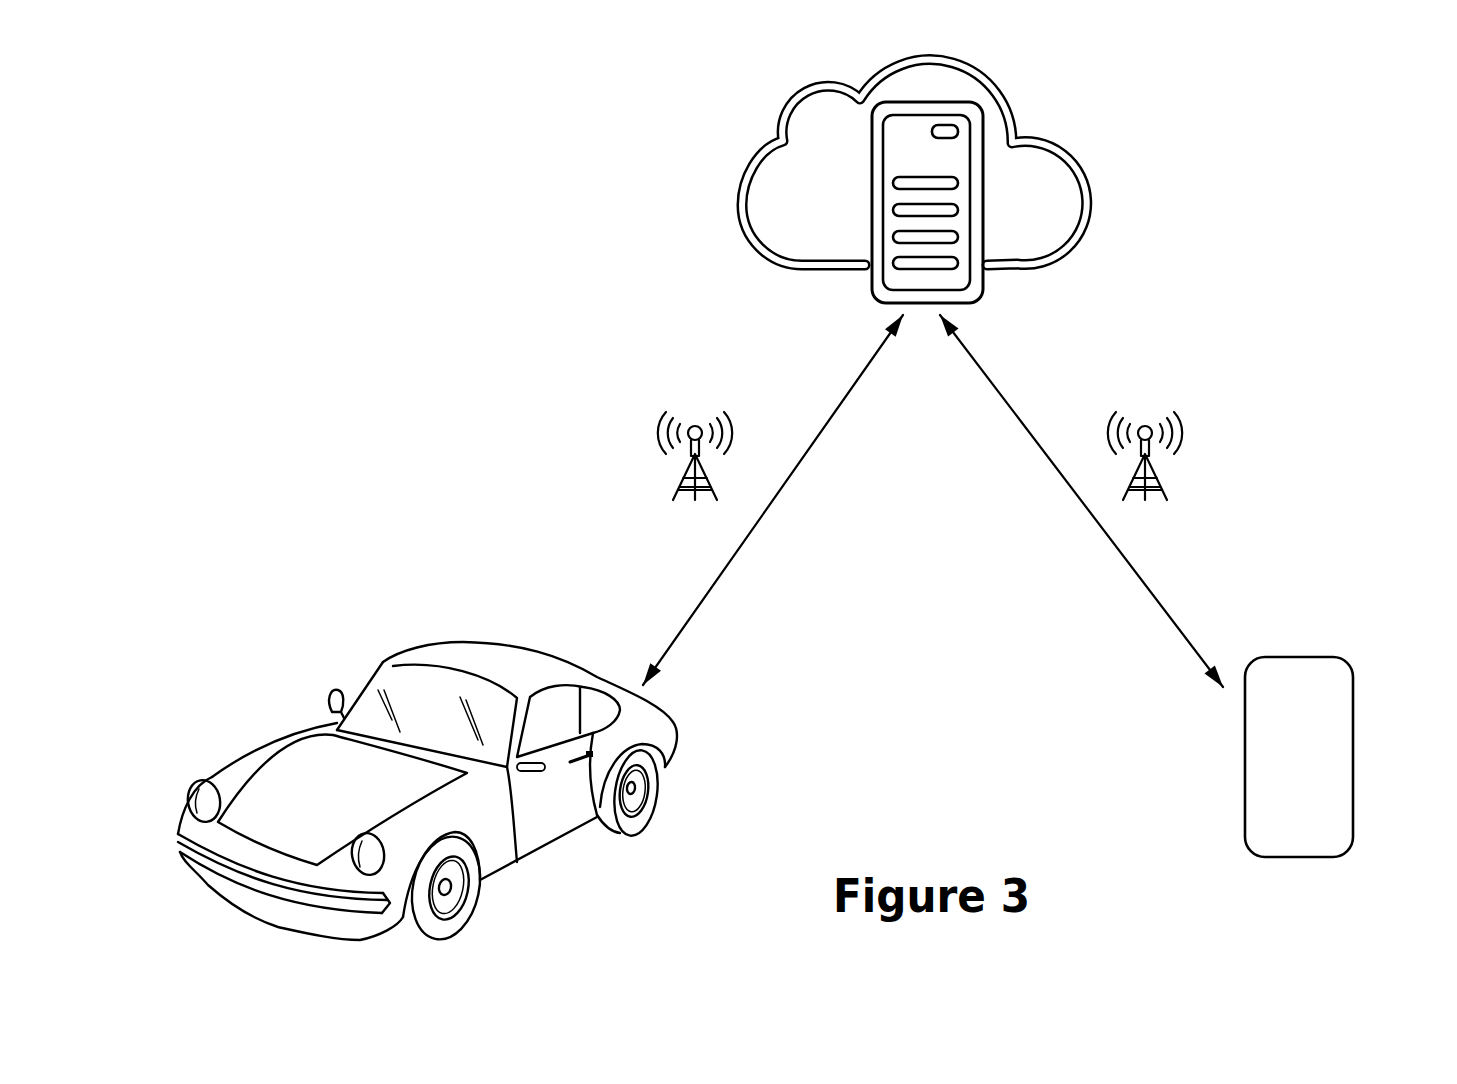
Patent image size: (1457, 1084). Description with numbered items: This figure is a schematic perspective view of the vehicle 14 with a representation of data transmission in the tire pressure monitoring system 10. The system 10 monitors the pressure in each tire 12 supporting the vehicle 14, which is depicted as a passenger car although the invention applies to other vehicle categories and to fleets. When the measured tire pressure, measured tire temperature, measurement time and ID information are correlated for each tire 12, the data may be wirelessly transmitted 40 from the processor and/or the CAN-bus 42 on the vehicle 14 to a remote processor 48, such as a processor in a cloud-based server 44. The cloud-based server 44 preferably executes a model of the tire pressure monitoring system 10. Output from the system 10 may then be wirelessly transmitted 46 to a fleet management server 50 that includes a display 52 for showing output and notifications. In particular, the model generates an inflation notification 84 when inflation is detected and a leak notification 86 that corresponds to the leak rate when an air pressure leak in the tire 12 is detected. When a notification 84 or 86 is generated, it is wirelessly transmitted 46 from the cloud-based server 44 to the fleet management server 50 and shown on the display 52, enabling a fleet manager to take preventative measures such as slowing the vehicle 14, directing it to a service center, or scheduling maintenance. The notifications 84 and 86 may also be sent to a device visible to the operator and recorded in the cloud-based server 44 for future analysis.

The tire pressure monitoring system 10 is at (1243, 157).
The tire 12 is at (461, 804).
The vehicle 14 is at (677, 743).
The wireless transmission 40 is at (683, 622).
The CAN-bus 42 is at (242, 873).
The cloud-based server 44 is at (835, 272).
The wireless transmission 46 is at (1133, 567).
The remote processor 48 is at (983, 190).
The fleet management server 50 is at (1350, 732).
The display 52 is at (1322, 710).
The inflation notification 84 is at (1305, 748).
The leak notification 86 is at (1302, 775).